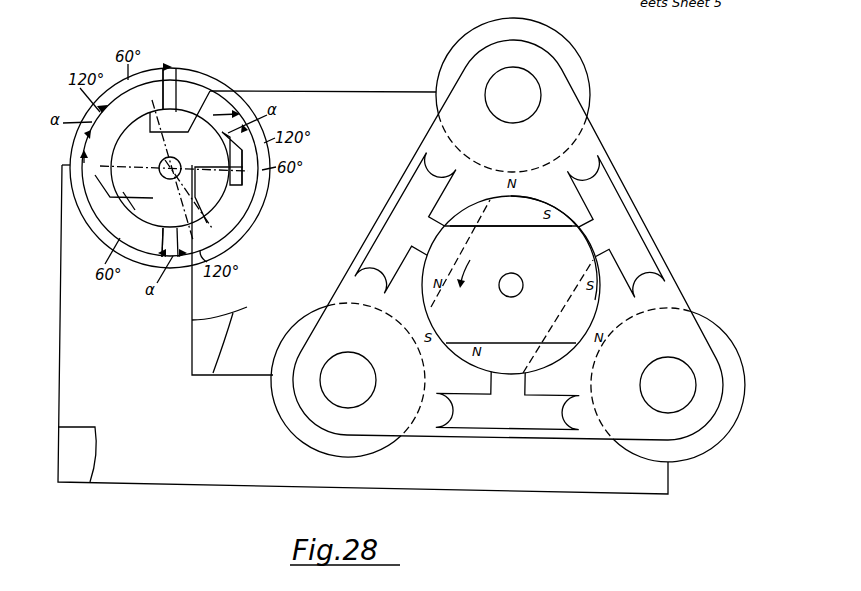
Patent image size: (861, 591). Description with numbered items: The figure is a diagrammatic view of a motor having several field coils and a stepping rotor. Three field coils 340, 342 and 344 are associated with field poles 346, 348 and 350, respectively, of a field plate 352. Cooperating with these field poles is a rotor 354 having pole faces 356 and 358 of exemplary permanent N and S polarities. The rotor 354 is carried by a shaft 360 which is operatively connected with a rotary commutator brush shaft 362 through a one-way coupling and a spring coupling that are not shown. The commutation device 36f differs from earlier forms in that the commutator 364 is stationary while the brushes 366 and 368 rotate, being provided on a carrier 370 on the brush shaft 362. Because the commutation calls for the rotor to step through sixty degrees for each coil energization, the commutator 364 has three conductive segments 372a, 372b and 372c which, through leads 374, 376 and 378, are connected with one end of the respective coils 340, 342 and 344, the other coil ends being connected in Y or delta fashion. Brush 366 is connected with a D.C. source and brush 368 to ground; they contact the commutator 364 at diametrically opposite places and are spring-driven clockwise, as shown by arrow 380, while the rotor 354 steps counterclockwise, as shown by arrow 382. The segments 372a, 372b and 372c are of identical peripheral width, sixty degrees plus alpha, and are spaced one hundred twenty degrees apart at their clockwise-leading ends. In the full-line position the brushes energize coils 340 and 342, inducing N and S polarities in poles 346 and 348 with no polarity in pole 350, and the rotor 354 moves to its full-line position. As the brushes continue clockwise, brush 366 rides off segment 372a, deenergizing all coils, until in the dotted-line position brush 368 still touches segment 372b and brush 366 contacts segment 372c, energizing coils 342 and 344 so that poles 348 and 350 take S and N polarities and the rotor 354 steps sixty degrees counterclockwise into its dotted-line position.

The commutation device 36f is at (90, 188).
The field coil 340 is at (726, 430).
The field coil 342 is at (288, 416).
The field coil 344 is at (590, 72).
The field pole 346 is at (578, 328).
The field pole 348 is at (421, 308).
The field pole 350 is at (511, 239).
The field plate 352 is at (668, 290).
The rotor 354 is at (483, 240).
The pole face 356 is at (430, 238).
The pole face 358 is at (592, 248).
The shaft 360 is at (510, 294).
The commutator brush shaft 362 is at (174, 163).
The commutator 364 is at (187, 104).
The brush 366 is at (123, 192).
The brush 368 is at (242, 148).
The carrier 370 is at (230, 188).
The conductive segment 372a is at (153, 220).
The conductive segment 372b is at (227, 198).
The conductive segment 372c is at (176, 58).
The lead 374 is at (95, 428).
The lead 376 is at (363, 329).
The lead 378 is at (332, 91).
The arrow 380 is at (72, 162).
The arrow 382 is at (466, 267).